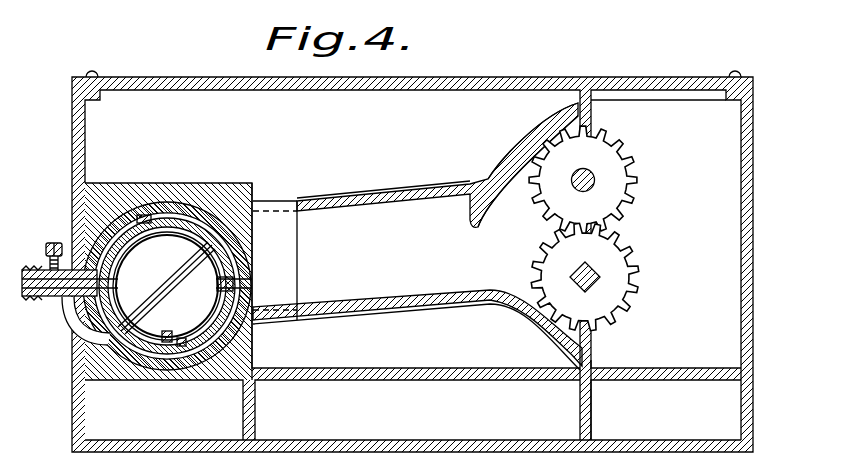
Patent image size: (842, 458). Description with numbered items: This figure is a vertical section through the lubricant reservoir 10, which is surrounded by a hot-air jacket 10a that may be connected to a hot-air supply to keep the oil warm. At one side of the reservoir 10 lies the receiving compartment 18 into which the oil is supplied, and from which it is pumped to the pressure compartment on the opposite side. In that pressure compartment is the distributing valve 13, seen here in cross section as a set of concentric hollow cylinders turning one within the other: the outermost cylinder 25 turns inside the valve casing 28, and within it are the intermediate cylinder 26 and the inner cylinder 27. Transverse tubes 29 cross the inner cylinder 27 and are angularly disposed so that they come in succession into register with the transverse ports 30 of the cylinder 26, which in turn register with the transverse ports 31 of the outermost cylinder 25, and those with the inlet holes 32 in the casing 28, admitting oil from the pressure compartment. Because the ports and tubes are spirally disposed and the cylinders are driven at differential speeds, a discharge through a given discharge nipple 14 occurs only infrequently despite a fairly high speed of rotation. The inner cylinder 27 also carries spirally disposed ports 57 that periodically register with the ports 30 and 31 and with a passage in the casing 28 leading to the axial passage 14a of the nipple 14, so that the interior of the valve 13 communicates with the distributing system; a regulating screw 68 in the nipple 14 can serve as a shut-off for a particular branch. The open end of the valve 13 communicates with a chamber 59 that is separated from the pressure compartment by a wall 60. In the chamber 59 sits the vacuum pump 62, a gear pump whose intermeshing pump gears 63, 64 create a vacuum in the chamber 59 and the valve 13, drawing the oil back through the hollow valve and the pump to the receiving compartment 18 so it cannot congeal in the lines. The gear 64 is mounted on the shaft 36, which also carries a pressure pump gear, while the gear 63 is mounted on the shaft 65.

The reservoir 10 is at (428, 78).
The hot-air jacket 10a is at (208, 434).
The distributing valve 13 is at (203, 197).
The discharge nipple 14 is at (45, 298).
The axial passage 14a is at (40, 268).
The receiving compartment 18 is at (722, 195).
The outermost cylinder 25 is at (138, 356).
The intermediate cylinder 26 is at (163, 354).
The inner cylinder 27 is at (222, 355).
The valve casing 28 is at (117, 372).
The transverse tubes 29 is at (178, 272).
The transverse ports 30 is at (150, 212).
The transverse ports 31 is at (117, 273).
The inlet holes 32 is at (240, 287).
The shaft 36 is at (586, 291).
The ports 57 is at (169, 331).
The chamber 59 is at (417, 320).
The wall 60 is at (396, 196).
The vacuum pump 62 is at (522, 143).
The pump gear 63 is at (546, 208).
The vacuum pump gear 64 is at (548, 272).
The shaft 65 is at (584, 192).
The regulating screw 68 is at (54, 243).